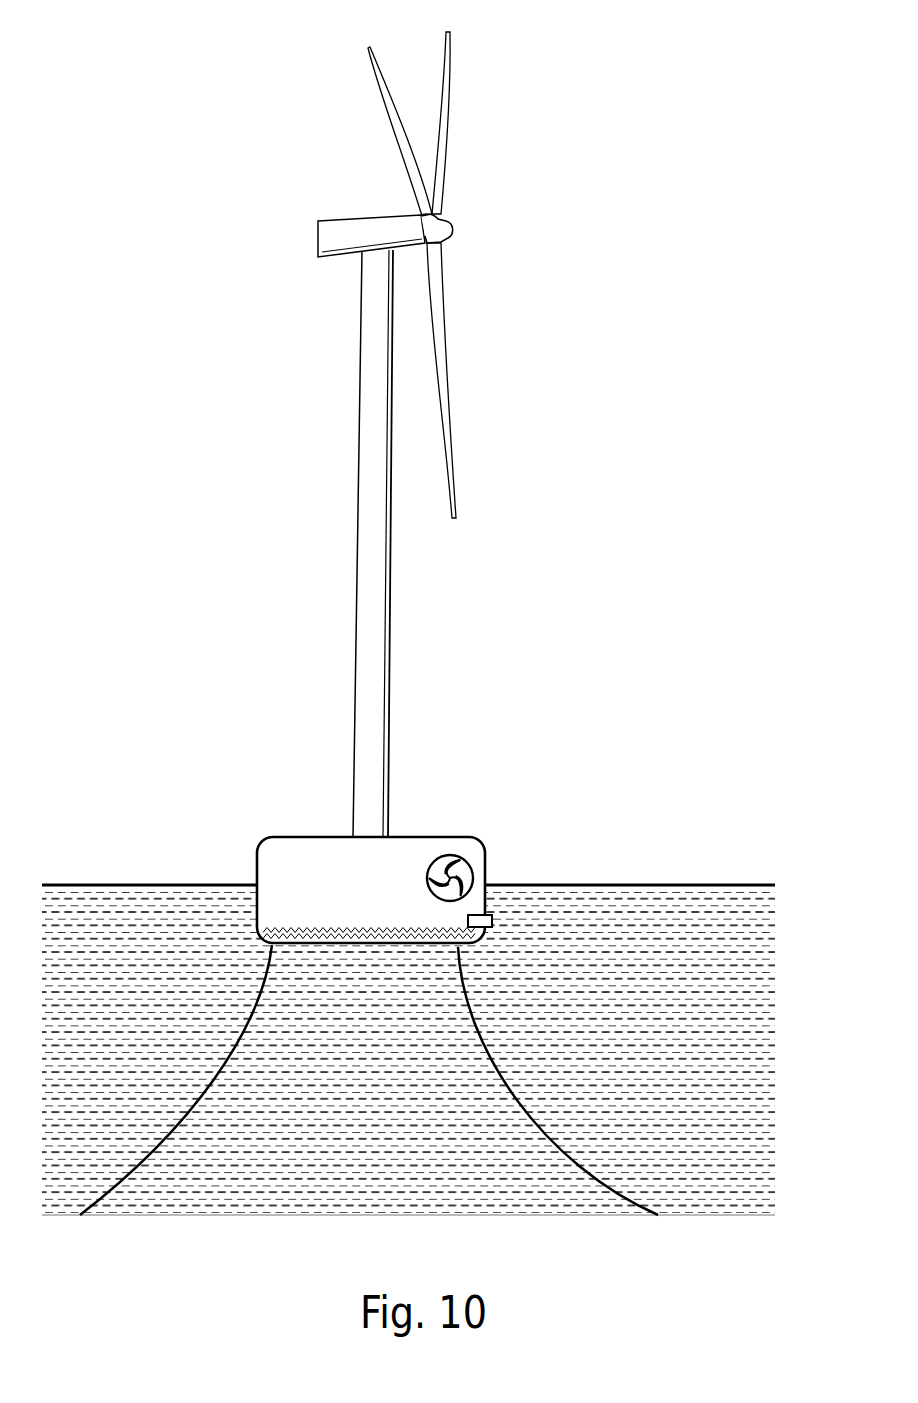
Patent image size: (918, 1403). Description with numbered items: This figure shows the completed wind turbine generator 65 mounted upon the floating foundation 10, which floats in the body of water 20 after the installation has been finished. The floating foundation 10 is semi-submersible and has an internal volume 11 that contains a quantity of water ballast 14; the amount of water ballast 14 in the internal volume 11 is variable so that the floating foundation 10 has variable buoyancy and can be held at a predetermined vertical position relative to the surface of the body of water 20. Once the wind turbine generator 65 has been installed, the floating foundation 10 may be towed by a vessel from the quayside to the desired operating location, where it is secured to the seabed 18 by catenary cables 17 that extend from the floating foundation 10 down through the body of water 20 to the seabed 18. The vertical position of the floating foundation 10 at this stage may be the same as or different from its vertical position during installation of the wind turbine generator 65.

The floating foundation 10 is at (250, 826).
The internal volume 11 is at (398, 883).
The water ballast 14 is at (365, 928).
The catenary cables 17 is at (212, 1083).
The seabed 18 is at (747, 1205).
The body of water 20 is at (384, 1117).
The wind turbine generator 65 is at (278, 364).